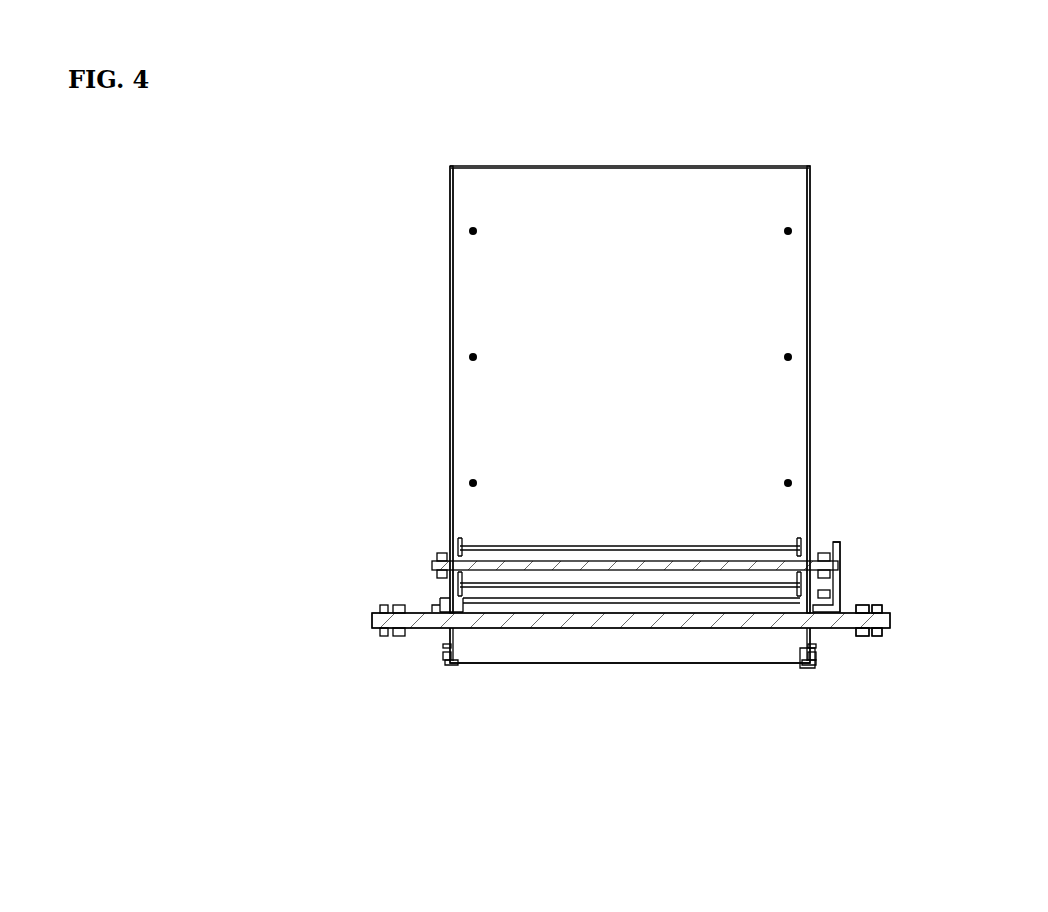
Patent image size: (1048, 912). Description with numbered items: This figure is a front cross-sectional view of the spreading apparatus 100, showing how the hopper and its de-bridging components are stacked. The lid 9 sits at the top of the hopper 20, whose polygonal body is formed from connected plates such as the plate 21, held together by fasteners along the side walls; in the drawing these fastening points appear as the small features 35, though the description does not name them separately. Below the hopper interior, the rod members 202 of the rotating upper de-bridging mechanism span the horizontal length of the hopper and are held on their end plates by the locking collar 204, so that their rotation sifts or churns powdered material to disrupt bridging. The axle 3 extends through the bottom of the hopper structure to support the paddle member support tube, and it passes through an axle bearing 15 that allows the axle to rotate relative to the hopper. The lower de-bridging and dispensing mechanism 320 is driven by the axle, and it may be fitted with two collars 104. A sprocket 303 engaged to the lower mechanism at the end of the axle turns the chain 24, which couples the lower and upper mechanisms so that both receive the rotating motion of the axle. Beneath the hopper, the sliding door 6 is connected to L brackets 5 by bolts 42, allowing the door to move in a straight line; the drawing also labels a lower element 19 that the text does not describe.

The spreading apparatus 100 is at (150, 310).
The lid 9 is at (552, 166).
The hopper 20 is at (450, 190).
The plate 21 is at (812, 177).
The fasteners 35 is at (468, 352).
The rod member 202 is at (527, 547).
The locking collar 204 is at (440, 548).
The axle bearing 15 is at (430, 607).
The axle 3 is at (367, 615).
The base plate underside 19 is at (378, 632).
The sliding door 6 is at (612, 664).
The lower de-bridging and dispensing mechanism 320 is at (633, 631).
The bolt 42 is at (442, 664).
The L bracket 5 is at (806, 668).
The collar 104 is at (880, 610).
The chain 24 is at (838, 545).
The sprocket 303 is at (848, 556).